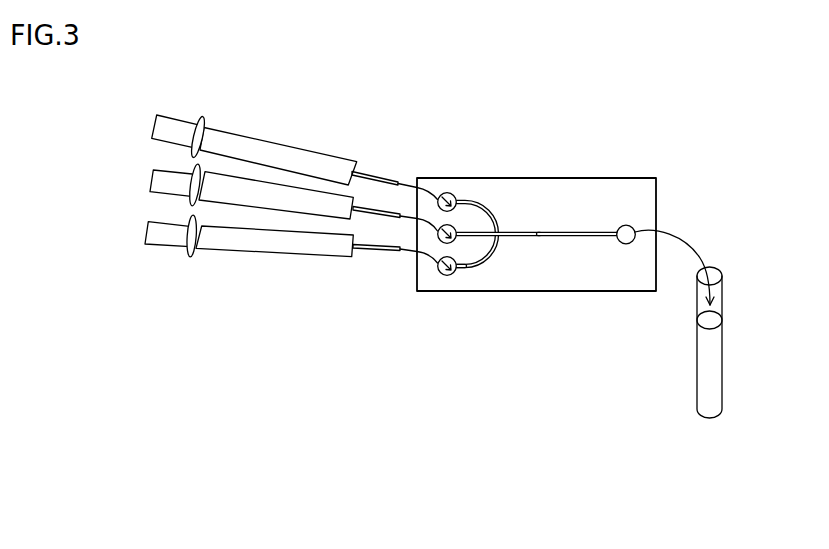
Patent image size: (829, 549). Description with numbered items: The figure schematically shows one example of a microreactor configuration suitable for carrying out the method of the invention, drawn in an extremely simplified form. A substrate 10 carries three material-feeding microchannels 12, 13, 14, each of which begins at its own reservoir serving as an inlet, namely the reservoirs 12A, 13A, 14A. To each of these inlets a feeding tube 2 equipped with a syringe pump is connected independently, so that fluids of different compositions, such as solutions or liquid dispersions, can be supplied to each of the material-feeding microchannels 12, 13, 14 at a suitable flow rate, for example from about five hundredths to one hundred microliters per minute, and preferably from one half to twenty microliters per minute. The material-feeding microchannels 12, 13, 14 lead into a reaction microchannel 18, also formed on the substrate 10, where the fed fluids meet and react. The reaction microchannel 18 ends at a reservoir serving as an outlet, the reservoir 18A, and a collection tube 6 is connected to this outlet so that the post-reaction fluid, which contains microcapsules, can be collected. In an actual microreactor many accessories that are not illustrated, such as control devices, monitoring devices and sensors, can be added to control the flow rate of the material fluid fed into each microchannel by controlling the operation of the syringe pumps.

The feeding tube 2 is at (146, 237).
The substrate 10 is at (650, 177).
The material-feeding microchannel 12 is at (482, 200).
The reservoir (inlet) 12A is at (448, 192).
The material-feeding microchannel 13 is at (482, 228).
The reservoir (inlet) 13A is at (455, 241).
The material-feeding microchannel 14 is at (468, 277).
The reservoir (inlet) 14A is at (450, 277).
The reaction microchannel 18 is at (567, 233).
The reservoir (outlet) 18A is at (630, 228).
The collection tube 6 is at (722, 347).